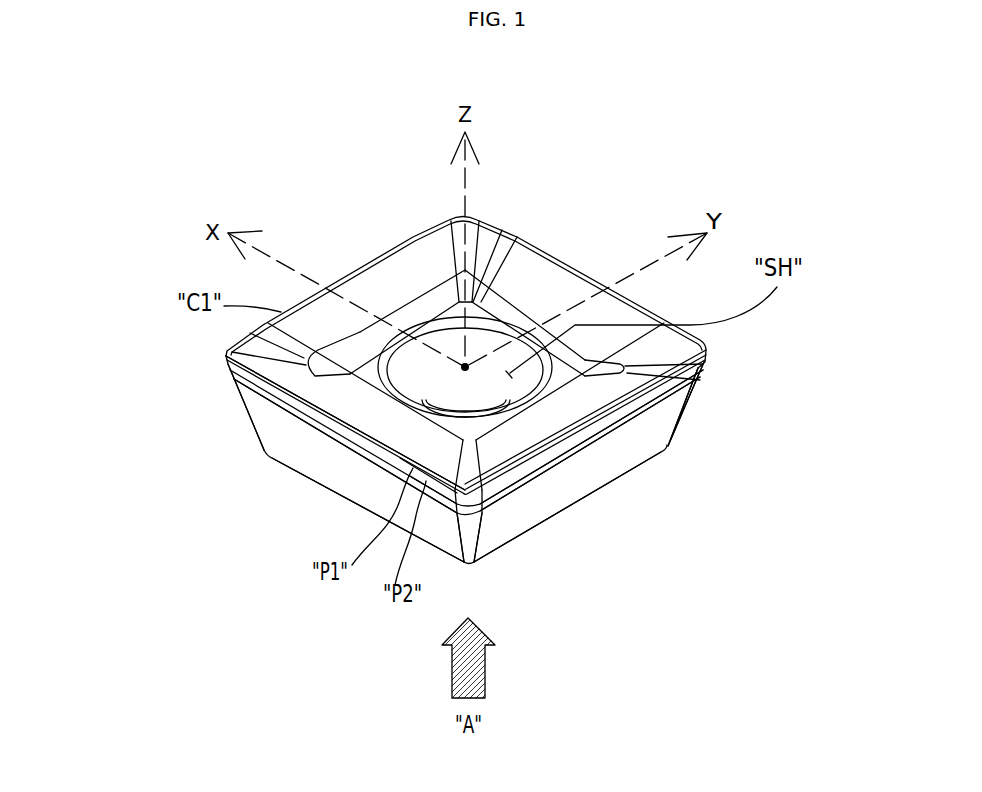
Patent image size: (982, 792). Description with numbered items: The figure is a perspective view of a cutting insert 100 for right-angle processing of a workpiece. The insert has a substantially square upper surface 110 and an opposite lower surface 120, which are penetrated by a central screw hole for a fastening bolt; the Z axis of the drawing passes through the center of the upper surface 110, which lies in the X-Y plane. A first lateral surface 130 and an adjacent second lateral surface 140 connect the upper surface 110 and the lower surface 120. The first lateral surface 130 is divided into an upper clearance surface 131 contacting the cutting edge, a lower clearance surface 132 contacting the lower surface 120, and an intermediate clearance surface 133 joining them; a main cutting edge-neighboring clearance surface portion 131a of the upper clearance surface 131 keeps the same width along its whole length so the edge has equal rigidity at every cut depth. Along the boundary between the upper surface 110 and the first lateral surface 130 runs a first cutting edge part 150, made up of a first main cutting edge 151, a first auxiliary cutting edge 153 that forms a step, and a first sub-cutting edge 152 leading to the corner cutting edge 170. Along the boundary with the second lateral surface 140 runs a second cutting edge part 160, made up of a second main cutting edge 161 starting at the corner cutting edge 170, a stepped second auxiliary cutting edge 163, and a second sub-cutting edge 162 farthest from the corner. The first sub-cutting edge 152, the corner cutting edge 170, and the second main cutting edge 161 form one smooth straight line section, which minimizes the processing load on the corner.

The cutting insert 100 is at (597, 196).
The upper surface 110 is at (401, 262).
The lower surface 120 is at (262, 470).
The first lateral surface 130 is at (334, 478).
The main cutting edge-neighboring clearance surface portion 131a is at (376, 438).
The upper clearance surface 131 is at (285, 400).
The lower clearance surface 132 is at (272, 437).
The intermediate clearance surface 133 is at (317, 428).
The second lateral surface 140 is at (595, 482).
The first cutting edge part 150 is at (239, 384).
The first main cutting edge 151 is at (243, 401).
The first sub-cutting edge 152 is at (429, 487).
The first auxiliary cutting edge 153 is at (409, 476).
The second cutting edge part 160 is at (622, 430).
The second main cutting edge 161 is at (548, 468).
The second sub-cutting edge 162 is at (688, 386).
The second auxiliary cutting edge 163 is at (683, 421).
The corner cutting edge 170 is at (472, 527).